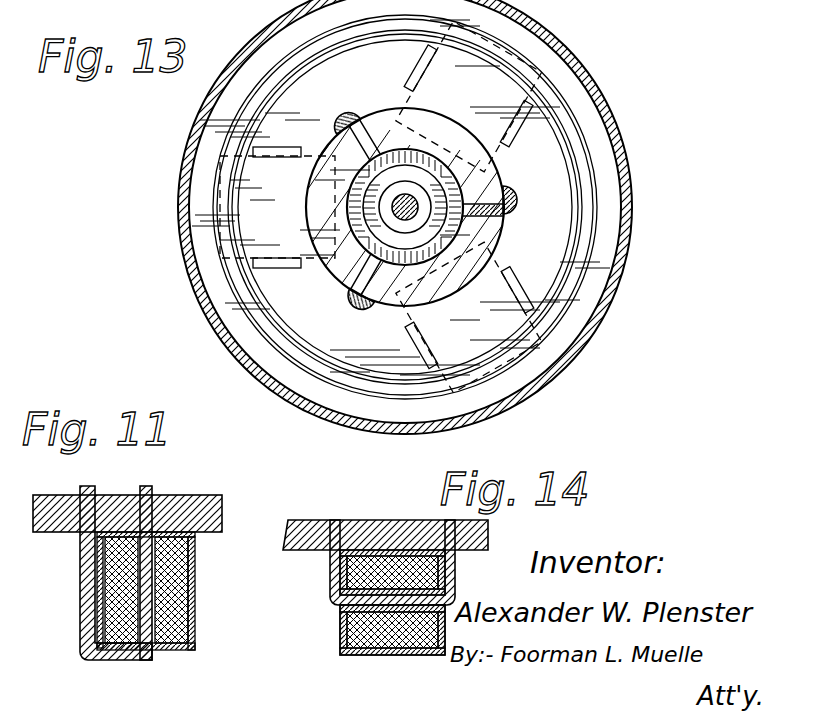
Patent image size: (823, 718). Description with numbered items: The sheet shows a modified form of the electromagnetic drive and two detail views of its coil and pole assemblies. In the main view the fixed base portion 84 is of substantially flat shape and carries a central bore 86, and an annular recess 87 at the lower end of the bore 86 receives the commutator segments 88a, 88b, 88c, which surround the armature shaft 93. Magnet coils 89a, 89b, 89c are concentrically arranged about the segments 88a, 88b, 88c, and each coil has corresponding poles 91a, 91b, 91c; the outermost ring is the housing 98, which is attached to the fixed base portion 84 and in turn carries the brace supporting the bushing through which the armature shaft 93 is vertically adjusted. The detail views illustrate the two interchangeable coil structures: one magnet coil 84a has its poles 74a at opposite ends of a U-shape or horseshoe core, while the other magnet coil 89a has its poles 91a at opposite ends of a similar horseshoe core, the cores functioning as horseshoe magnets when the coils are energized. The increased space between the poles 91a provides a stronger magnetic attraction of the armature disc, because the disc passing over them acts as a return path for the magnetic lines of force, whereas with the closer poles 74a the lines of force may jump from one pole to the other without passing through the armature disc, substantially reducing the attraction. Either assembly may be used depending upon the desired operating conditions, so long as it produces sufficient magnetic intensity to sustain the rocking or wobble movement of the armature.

In FIG. 13, the bore 86 is at (410, 247).
In FIG. 13, the annular recess 87 is at (387, 157).
In FIG. 13, the commutator segment 88a is at (395, 310).
In FIG. 13, the commutator segment 88b is at (336, 147).
In FIG. 13, the commutator segment 88c is at (490, 187).
In FIG. 13, the magnet coil 89a is at (218, 240).
In FIG. 14, the magnet coil 89a is at (331, 594).
In FIG. 13, the magnet coil 89b is at (556, 46).
In FIG. 13, the magnet coil 89c is at (545, 378).
In FIG. 13, the pole 91a is at (300, 268).
In FIG. 14, the pole 91a is at (447, 520).
In FIG. 13, the pole 91b is at (528, 116).
In FIG. 13, the pole 91c is at (503, 287).
In FIG. 13, the armature shaft 93 is at (413, 217).
In FIG. 13, the housing 98 is at (632, 205).
In FIG. 11, the pole 74a is at (155, 484).
In FIG. 14, the fixed base portion 84 is at (332, 490).
In FIG. 11, the magnet coil 84a is at (193, 590).